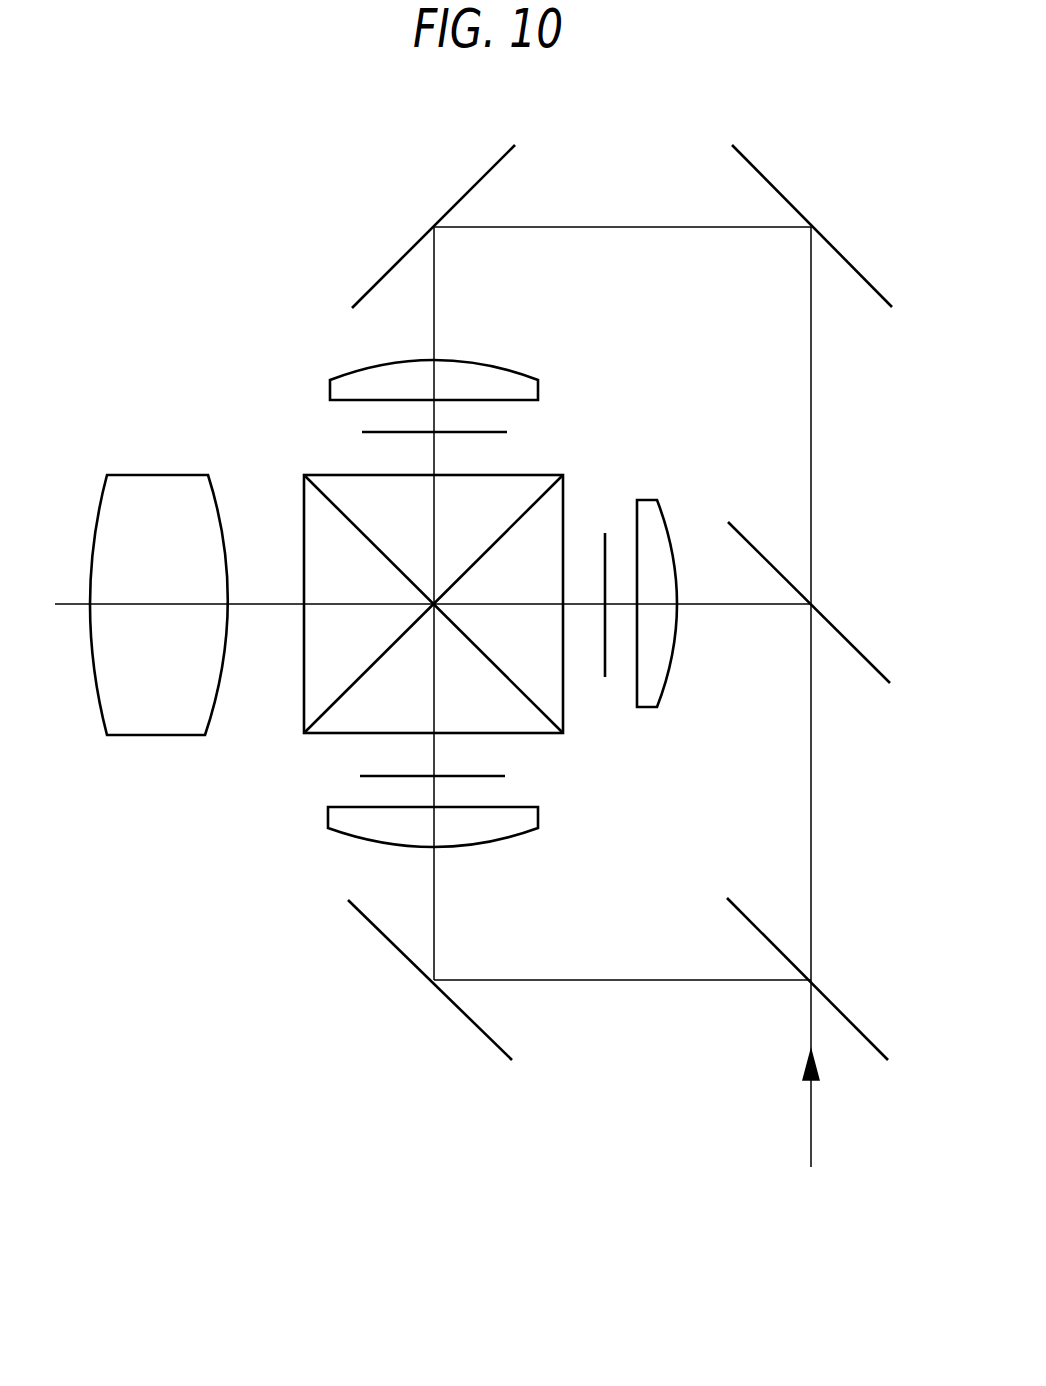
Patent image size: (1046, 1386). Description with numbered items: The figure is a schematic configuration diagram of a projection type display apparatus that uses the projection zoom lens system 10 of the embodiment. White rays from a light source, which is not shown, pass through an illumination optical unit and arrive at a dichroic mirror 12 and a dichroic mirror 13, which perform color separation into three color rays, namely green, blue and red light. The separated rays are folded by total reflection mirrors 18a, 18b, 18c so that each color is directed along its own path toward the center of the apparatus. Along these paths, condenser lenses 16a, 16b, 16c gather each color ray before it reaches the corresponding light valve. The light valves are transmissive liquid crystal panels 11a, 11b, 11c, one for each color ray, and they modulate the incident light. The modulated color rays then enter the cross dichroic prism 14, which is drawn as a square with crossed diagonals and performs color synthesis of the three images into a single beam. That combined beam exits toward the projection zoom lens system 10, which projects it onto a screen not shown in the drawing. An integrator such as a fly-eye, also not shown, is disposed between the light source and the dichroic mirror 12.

The projection zoom lens system 10 is at (152, 723).
The transmissive liquid crystal panel 11a is at (487, 773).
The transmissive liquid crystal panel 11b is at (613, 547).
The transmissive liquid crystal panel 11c is at (377, 432).
The dichroic mirror 12 is at (865, 1033).
The dichroic mirror 13 is at (863, 657).
The cross dichroic prism 14 is at (313, 688).
The condenser lens 16a is at (497, 828).
The condenser lens 16b is at (660, 690).
The condenser lens 16c is at (510, 377).
The total reflection mirror 18a is at (467, 1017).
The total reflection mirror 18b is at (860, 273).
The total reflection mirror 18c is at (360, 297).